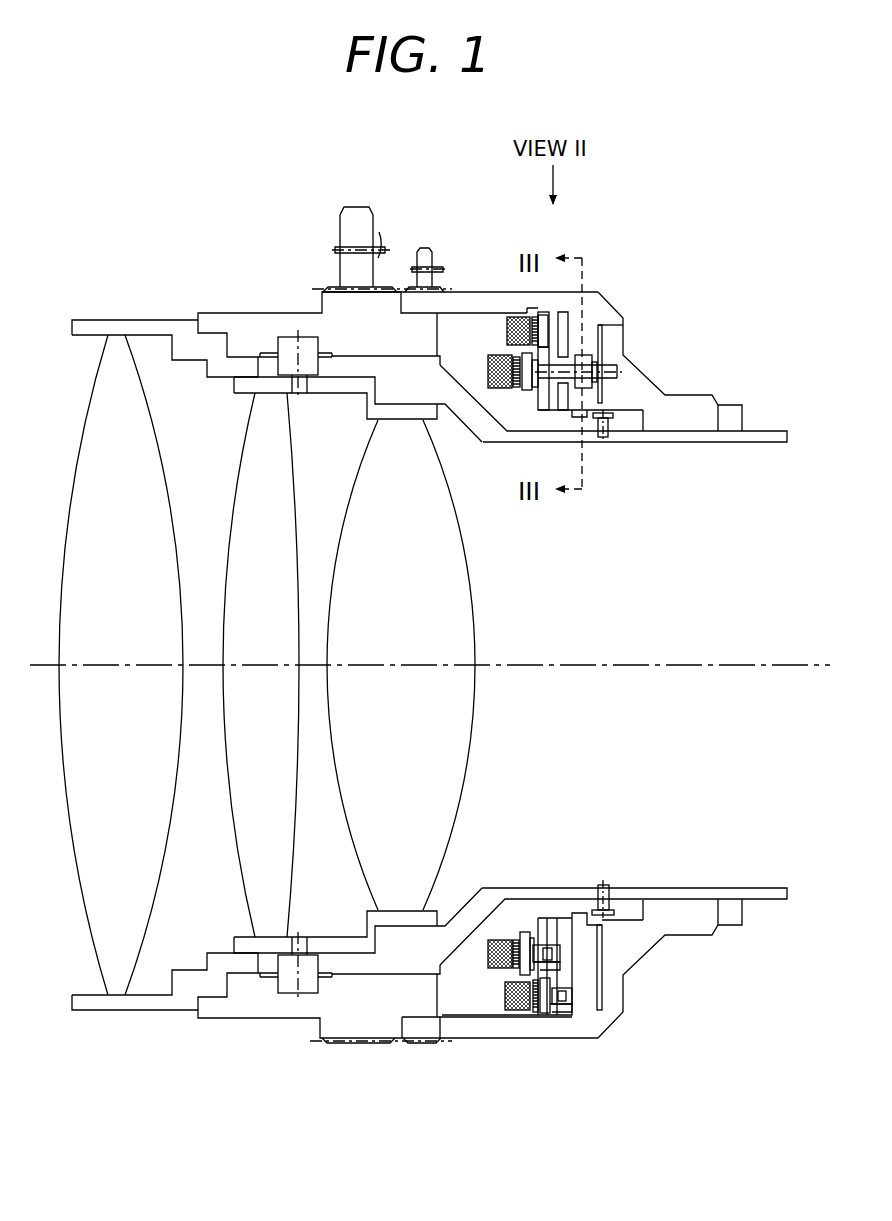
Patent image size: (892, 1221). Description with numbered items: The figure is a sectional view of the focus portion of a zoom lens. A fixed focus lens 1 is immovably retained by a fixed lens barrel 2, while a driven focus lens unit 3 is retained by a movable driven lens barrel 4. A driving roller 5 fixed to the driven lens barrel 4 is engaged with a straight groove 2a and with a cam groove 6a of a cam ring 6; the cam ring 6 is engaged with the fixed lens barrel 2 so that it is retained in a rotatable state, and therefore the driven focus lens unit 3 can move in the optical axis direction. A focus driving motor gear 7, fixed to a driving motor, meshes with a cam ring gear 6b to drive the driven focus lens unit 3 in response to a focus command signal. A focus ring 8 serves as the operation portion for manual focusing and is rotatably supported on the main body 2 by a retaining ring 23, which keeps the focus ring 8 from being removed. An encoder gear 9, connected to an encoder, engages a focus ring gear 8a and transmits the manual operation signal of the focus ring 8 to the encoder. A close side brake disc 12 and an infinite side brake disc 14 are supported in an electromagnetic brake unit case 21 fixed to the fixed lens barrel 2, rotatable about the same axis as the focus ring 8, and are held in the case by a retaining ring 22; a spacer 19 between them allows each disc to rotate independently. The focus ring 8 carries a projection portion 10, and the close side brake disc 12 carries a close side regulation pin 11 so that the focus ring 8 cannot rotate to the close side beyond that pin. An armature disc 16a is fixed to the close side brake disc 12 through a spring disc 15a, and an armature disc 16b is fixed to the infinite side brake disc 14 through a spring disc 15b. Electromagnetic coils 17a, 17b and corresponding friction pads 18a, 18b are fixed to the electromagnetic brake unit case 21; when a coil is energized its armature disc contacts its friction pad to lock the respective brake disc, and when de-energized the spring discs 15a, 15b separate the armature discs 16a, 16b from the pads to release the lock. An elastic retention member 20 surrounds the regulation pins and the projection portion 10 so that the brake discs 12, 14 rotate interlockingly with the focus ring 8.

The fixed focus lens 1 is at (103, 921).
The fixed lens barrel 2 is at (92, 1003).
The straight groove 2a is at (270, 360).
The driven focus lens unit 3 is at (253, 478).
The driven lens barrel 4 is at (242, 940).
The driving roller 5 is at (288, 985).
The cam ring 6 is at (207, 315).
The cam groove 6a is at (270, 362).
The cam ring gear 6b is at (333, 287).
The focus driving motor gear 7 is at (345, 235).
The focus ring 8 is at (483, 303).
The focus ring gear 8a is at (397, 283).
The encoder gear 9 is at (423, 247).
The projection portion 10 is at (608, 370).
The close side regulation pin 11 is at (590, 362).
The close side brake disc 12 is at (562, 365).
The infinite side brake disc 14 is at (547, 358).
The spring disc 15a is at (545, 962).
The spring disc 15b is at (553, 1018).
The armature disc 16a is at (540, 970).
The armature disc 16b is at (545, 1018).
The electromagnetic coil 17a is at (498, 973).
The electromagnetic coil 17b is at (517, 1008).
The friction pad 18a is at (540, 940).
The friction pad 18b is at (535, 1020).
The spacer 19 is at (557, 933).
The elastic retention member 20 is at (600, 367).
The electromagnetic brake unit case 21 is at (463, 965).
The retaining ring 22 is at (574, 912).
The retaining ring 23 is at (740, 418).